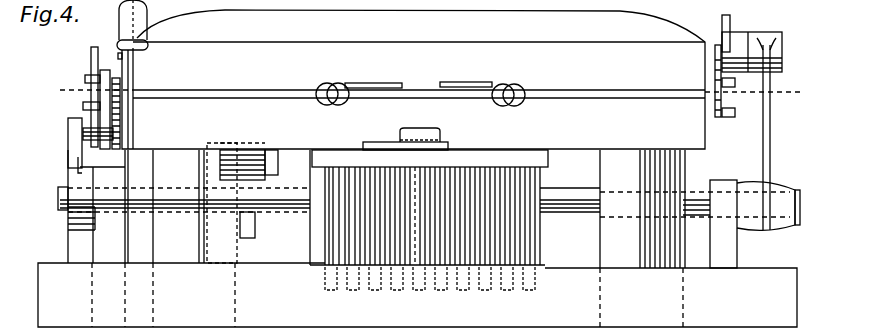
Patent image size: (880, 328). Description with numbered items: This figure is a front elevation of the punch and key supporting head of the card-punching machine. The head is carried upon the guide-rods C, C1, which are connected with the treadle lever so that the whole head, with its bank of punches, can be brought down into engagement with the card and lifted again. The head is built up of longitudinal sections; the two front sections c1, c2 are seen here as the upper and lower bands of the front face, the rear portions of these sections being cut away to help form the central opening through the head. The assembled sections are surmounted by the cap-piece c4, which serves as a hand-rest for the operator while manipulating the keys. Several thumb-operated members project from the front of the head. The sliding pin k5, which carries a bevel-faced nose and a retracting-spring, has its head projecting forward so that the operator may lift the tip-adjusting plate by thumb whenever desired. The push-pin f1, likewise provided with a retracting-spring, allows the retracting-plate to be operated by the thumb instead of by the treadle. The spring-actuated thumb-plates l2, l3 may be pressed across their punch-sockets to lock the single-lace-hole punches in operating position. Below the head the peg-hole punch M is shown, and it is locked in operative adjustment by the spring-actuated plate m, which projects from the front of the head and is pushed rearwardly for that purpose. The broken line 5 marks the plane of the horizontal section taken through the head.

The section line 5 is at (434, 91).
The guide-rod C is at (411, 127).
The guide-rod C1 is at (700, 153).
The front section of head c1 is at (640, 71).
The front section of head c2 is at (640, 126).
The cap-piece c4 is at (422, 23).
The sliding pin k5 is at (544, 59).
The thumb-plate l2 is at (378, 83).
The thumb-plate l3 is at (467, 85).
The push-pin f1 is at (342, 86).
The spring-actuated plate m is at (432, 131).
The peg-hole punch M is at (448, 160).